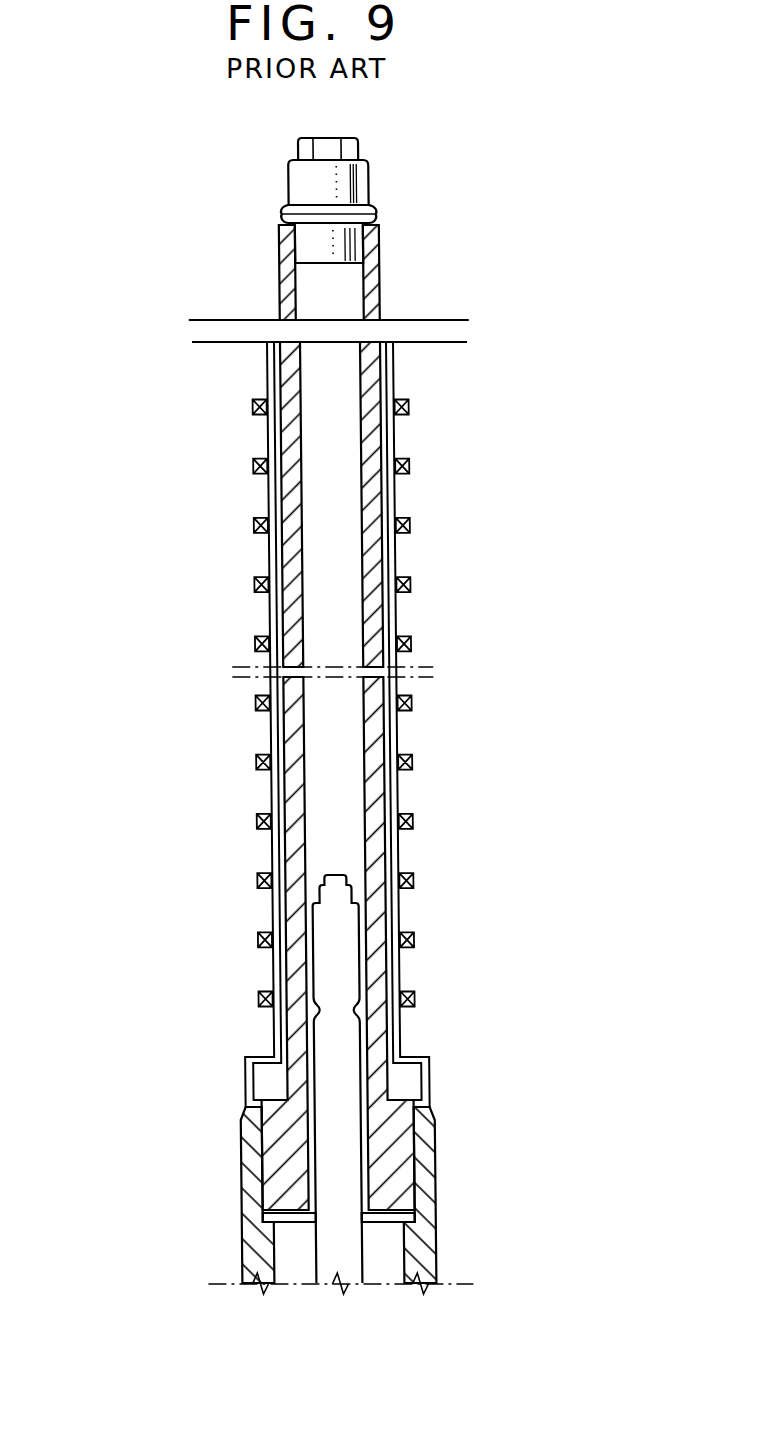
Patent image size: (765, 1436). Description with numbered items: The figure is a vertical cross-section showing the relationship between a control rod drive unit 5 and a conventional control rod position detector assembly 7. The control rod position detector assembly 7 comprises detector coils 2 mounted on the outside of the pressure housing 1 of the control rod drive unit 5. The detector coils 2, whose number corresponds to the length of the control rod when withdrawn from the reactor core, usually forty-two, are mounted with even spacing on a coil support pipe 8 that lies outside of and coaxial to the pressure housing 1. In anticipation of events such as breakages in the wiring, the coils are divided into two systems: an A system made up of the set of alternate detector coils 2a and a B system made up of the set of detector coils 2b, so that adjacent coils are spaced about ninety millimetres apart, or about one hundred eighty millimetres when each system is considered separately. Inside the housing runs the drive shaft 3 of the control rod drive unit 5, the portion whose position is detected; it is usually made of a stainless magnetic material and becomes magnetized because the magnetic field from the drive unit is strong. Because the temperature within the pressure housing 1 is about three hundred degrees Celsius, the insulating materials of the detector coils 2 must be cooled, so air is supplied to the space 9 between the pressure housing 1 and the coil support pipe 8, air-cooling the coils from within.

The pressure housing 1 is at (378, 273).
The detector coils 2 is at (410, 465).
The A system detector coils 2a is at (410, 406).
The B system detector coils 2b is at (252, 465).
The drive shaft 3 is at (352, 930).
The control rod drive unit 5 is at (438, 1243).
The control rod position detector assembly 7 is at (176, 511).
The coil support pipe 8 is at (393, 612).
The space 9 is at (278, 383).